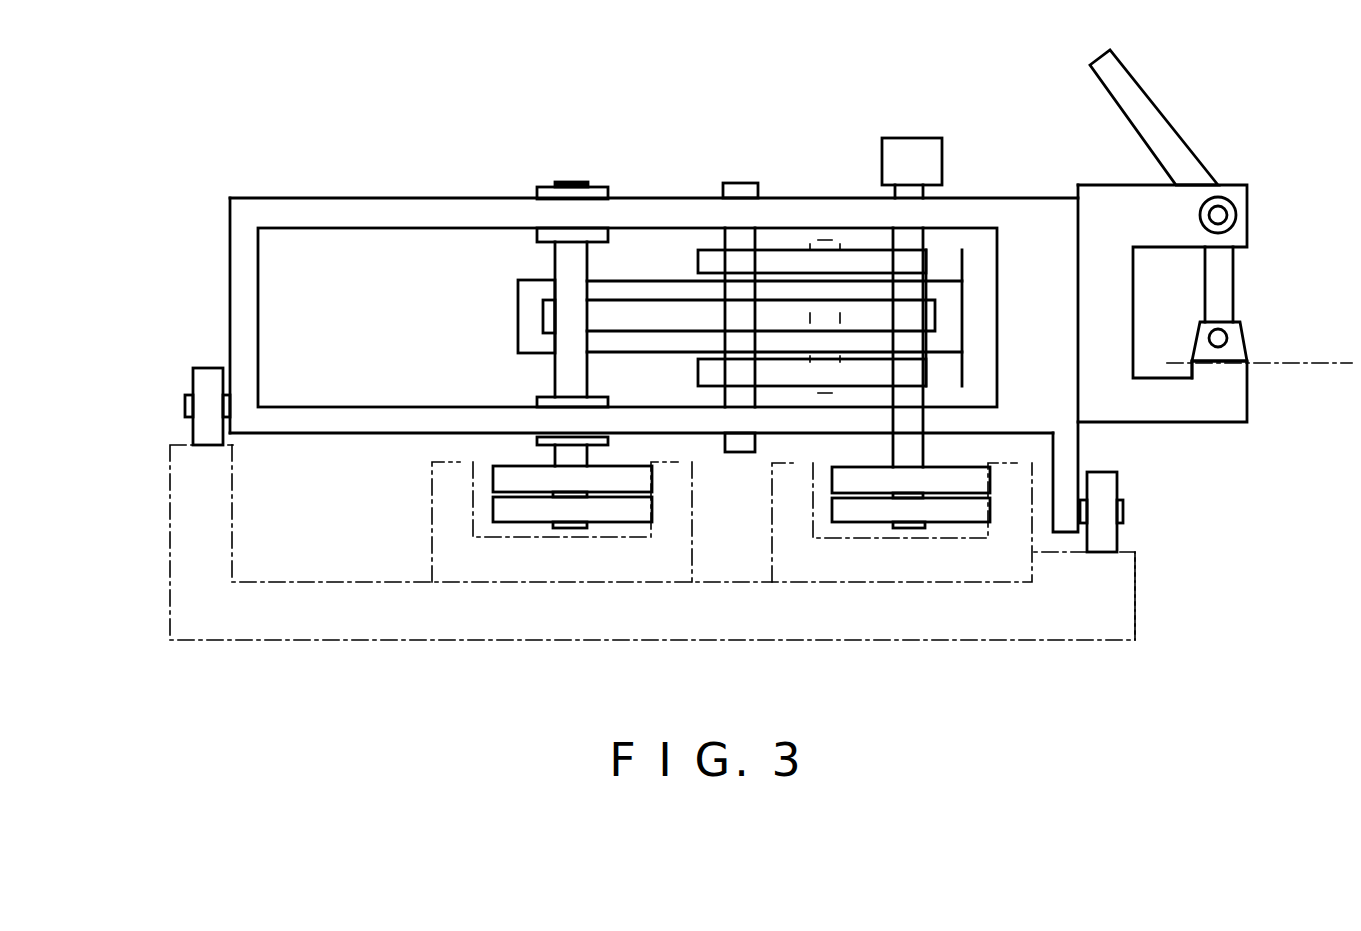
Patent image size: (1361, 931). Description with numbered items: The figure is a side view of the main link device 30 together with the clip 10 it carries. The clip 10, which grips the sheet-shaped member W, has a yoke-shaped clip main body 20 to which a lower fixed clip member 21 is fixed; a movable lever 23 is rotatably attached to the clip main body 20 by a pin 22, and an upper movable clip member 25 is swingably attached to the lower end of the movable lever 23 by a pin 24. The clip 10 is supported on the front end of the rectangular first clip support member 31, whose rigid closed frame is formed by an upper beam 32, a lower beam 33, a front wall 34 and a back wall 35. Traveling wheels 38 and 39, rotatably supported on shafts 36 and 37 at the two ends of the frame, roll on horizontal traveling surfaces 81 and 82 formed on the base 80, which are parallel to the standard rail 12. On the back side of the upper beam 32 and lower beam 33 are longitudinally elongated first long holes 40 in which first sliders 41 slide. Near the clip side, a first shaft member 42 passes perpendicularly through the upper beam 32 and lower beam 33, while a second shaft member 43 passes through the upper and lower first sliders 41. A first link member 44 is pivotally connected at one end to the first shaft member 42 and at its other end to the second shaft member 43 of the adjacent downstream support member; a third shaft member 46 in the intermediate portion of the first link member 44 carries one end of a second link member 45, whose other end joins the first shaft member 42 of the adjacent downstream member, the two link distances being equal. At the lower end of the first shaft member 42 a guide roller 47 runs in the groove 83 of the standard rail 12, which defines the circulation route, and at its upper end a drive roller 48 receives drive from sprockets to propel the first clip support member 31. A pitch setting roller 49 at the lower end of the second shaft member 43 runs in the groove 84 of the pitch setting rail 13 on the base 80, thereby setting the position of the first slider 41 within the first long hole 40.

The clip 10 is at (1258, 156).
The standard rail 12 is at (798, 564).
The pitch setting rail 13 is at (453, 564).
The clip main body 20 is at (1240, 406).
The lower fixed clip member 21 is at (1240, 370).
The pin 22 is at (1240, 216).
The movable lever 23 is at (1138, 103).
The pin 24 is at (1230, 321).
The upper movable clip member 25 is at (1233, 350).
The main link device 30 is at (411, 124).
The first clip support member 31 is at (967, 167).
The upper beam 32 is at (643, 212).
The lower beam 33 is at (713, 436).
The front wall 34 is at (1028, 212).
The back wall 35 is at (248, 220).
The shaft 36 is at (187, 407).
The shaft 37 is at (1123, 512).
The traveling wheel 38 is at (198, 380).
The traveling wheel 39 is at (1108, 488).
The first long hole 40 is at (312, 220).
The first slider 41 is at (543, 186).
The first shaft member 42 is at (908, 262).
The second shaft member 43 is at (565, 259).
The first link member 44 is at (530, 317).
The second link member 45 is at (713, 263).
The third shaft member 46 is at (742, 184).
The guide roller 47 is at (875, 508).
The drive roller 48 is at (910, 153).
The pitch setting roller 49 is at (525, 508).
The base 80 is at (1113, 631).
The traveling surface 81 is at (172, 444).
The traveling surface 82 is at (1137, 551).
The groove 83 is at (965, 531).
The groove 84 is at (628, 531).